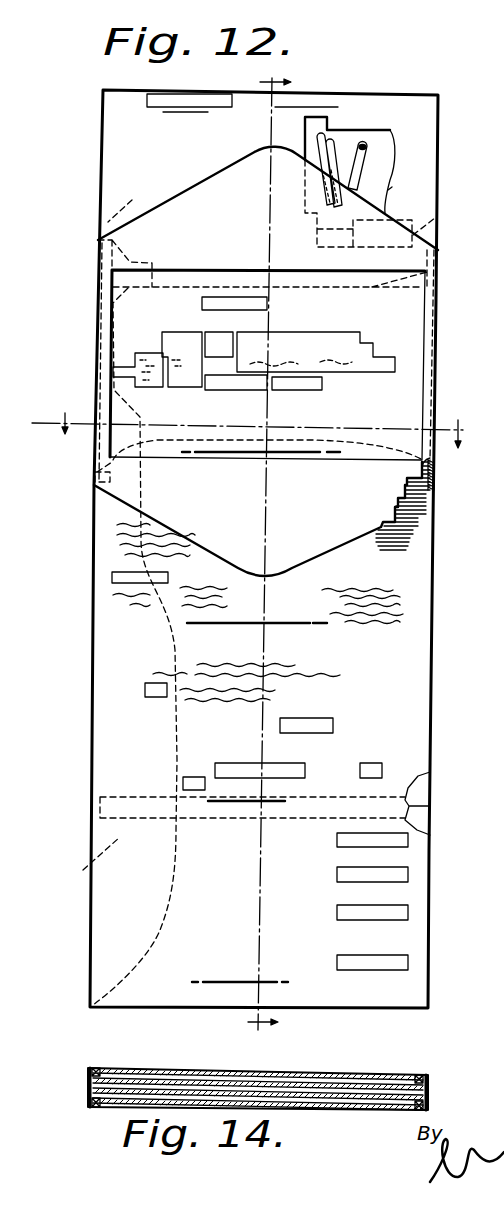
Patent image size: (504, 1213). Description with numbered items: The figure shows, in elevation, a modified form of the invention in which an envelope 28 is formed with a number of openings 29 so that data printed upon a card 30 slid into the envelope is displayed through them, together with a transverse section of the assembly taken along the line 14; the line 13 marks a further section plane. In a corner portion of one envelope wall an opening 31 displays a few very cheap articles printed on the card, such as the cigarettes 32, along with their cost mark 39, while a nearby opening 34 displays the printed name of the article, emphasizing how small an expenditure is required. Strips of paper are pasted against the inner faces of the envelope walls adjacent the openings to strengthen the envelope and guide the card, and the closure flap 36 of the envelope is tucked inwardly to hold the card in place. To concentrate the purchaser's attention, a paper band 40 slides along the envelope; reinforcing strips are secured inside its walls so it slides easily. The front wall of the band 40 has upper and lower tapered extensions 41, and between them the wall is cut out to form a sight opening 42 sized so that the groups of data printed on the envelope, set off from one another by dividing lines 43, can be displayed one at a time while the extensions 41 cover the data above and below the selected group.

In FIG. 12, the section line 13— 13 is at (269, 550).
In FIG. 12, the section line 14— 14 is at (263, 430).
In FIG. 12, the envelope 28 is at (420, 663).
In FIG. 12, the openings 29 is at (152, 107).
In FIG. 12, the card 30 is at (403, 506).
In FIG. 14, the card 30 is at (310, 1092).
In FIG. 12, the opening 31 is at (392, 187).
In FIG. 12, the cigarettes 32 is at (363, 163).
In FIG. 12, the opening 34 is at (435, 228).
In FIG. 12, the closure flap 36 is at (113, 592).
In FIG. 14, the closure flap 36 is at (147, 1088).
In FIG. 12, the cost mark 39 is at (318, 117).
In FIG. 12, the band 40 is at (428, 317).
In FIG. 12, the tapered extensions 41 is at (227, 171).
In FIG. 12, the sight opening 42 is at (423, 400).
In FIG. 14, the sight opening 42 is at (385, 1110).
In FIG. 12, the dividing lines 43 is at (310, 276).